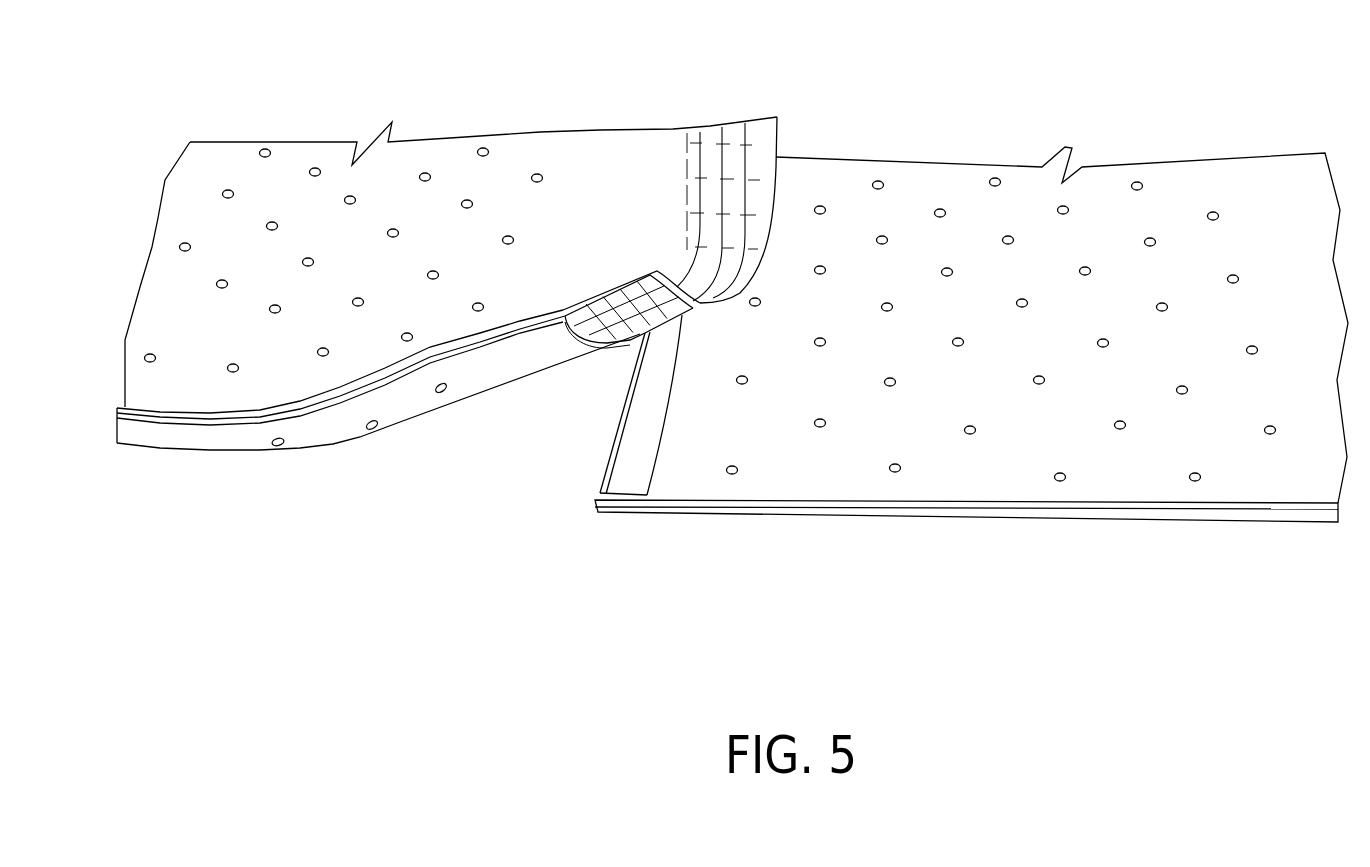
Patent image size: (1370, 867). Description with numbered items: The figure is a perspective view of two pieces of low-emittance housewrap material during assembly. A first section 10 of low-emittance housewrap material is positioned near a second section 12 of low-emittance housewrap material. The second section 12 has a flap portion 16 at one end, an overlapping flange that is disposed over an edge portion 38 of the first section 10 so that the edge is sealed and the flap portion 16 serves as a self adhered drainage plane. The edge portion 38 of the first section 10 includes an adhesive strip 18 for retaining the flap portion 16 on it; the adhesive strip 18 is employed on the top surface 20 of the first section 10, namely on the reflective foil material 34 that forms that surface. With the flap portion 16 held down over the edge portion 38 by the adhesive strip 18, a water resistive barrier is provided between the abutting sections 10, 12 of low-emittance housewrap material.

The first section of low-emittance housewrap material 10 is at (983, 508).
The second section of low-emittance housewrap material 12 is at (513, 140).
The flap portion 16 is at (735, 130).
The adhesive strip 18 is at (622, 475).
The top surface 20 is at (1185, 187).
The reflective foil material 34 is at (1263, 496).
The edge portion 38 is at (610, 462).